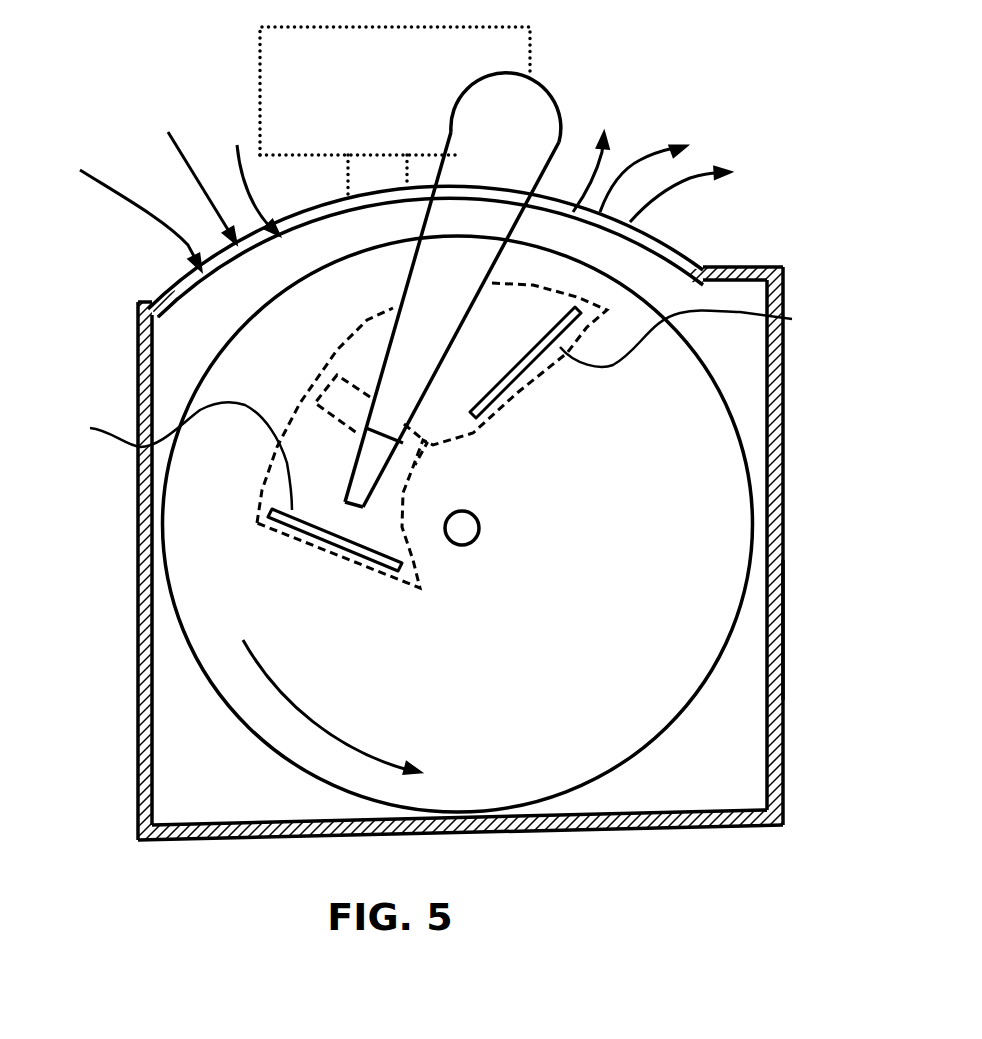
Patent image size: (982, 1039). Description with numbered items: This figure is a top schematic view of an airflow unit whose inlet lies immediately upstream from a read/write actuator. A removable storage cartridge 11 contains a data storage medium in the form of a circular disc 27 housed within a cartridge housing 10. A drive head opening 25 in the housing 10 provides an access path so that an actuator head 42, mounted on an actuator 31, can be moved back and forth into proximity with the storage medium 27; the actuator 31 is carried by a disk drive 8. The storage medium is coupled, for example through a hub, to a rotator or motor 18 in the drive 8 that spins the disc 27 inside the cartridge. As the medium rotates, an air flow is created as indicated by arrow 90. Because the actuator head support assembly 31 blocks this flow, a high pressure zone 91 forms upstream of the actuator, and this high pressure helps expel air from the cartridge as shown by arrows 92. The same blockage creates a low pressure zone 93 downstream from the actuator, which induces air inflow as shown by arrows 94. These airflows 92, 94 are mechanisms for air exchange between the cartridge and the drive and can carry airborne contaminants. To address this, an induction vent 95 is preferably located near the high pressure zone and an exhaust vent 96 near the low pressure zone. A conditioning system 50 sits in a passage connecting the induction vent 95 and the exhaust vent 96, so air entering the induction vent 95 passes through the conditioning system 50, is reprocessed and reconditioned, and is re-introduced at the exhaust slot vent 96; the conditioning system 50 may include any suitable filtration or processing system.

The disk drive 8 is at (287, 97).
The cartridge housing 10 is at (710, 773).
The removable storage cartridge 11 is at (791, 627).
The rotator or motor 18 is at (387, 172).
The drive head opening 25 is at (195, 284).
The circular disc 27 is at (722, 528).
The actuator 31 is at (528, 46).
The actuator head 42 is at (363, 478).
The conditioning system 50 is at (413, 450).
The air flow arrow 90 is at (287, 697).
The high pressure zone 91 is at (549, 421).
The air outflow arrows 92 is at (636, 132).
The low pressure zone 93 is at (303, 604).
The air inflow arrows 94 is at (152, 147).
The induction vent 95 is at (693, 337).
The exhaust vent 96 is at (172, 456).